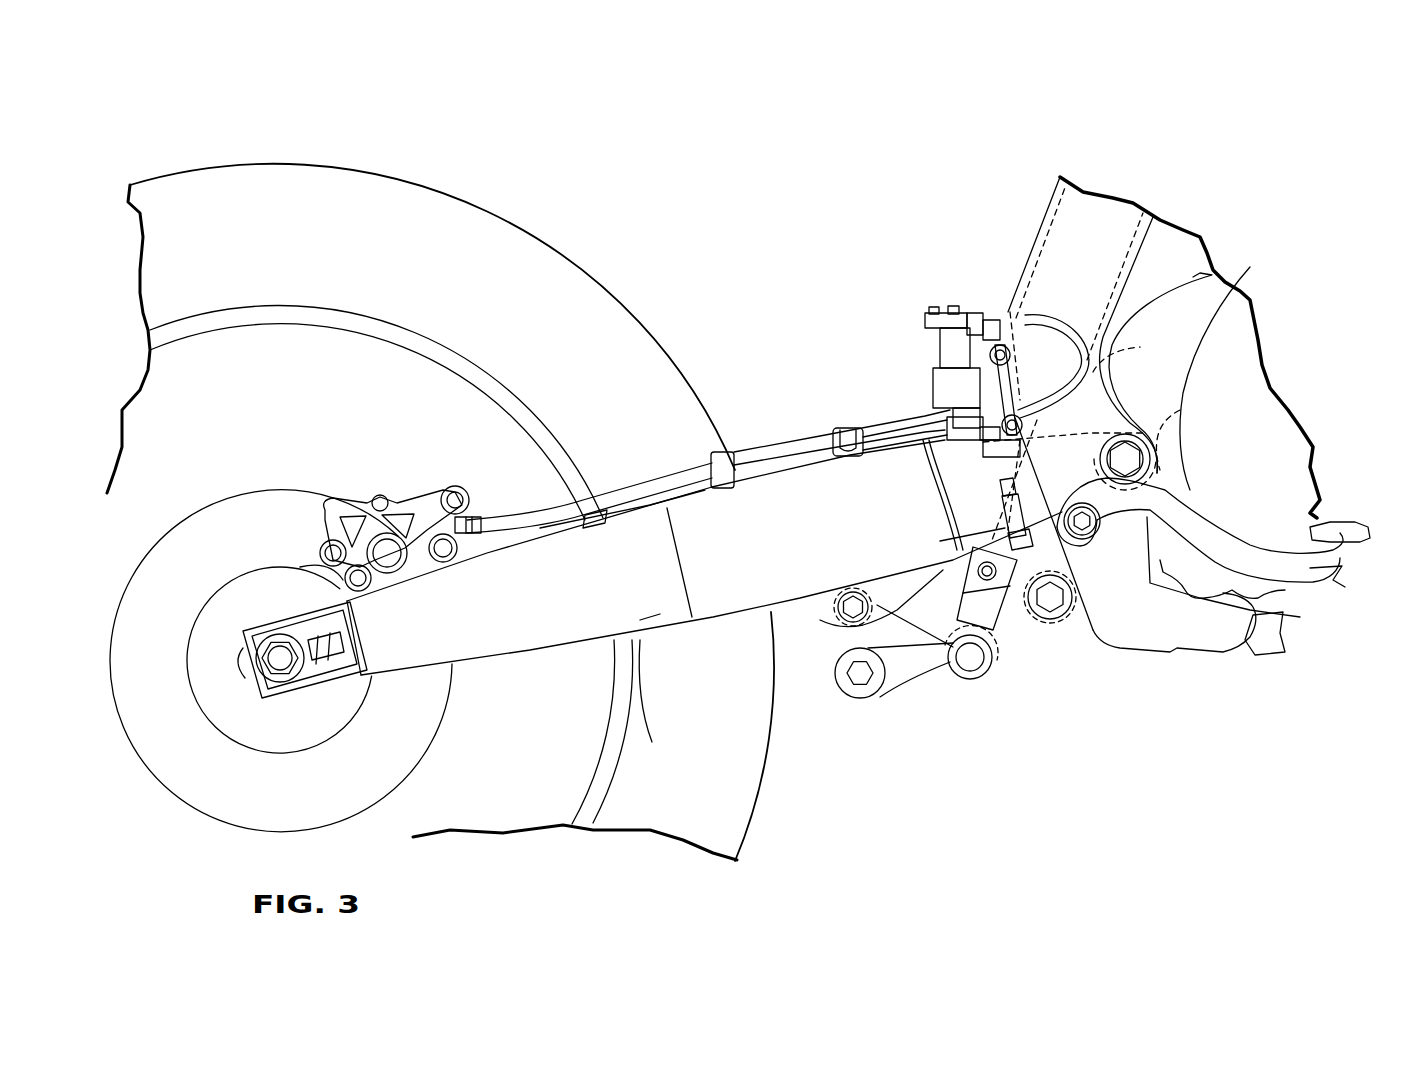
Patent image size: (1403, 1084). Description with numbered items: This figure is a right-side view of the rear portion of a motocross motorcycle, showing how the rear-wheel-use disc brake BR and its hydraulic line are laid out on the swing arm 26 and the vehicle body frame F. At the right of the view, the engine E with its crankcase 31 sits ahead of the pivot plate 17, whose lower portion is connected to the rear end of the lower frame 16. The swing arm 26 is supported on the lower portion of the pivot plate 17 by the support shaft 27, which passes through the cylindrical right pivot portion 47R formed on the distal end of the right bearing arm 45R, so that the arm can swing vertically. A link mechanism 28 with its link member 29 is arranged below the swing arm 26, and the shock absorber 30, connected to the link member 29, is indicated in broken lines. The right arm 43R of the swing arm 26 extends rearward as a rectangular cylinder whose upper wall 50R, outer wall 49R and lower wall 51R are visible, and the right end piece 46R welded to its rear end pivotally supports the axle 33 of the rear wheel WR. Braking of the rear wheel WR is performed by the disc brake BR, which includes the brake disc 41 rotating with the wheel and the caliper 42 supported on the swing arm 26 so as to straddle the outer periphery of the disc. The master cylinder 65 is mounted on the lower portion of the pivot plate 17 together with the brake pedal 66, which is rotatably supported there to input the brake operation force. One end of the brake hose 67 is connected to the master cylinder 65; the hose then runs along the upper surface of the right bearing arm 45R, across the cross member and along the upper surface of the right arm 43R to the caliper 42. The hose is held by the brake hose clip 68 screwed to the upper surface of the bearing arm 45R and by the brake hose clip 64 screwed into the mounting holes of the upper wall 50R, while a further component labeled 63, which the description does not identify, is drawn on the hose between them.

The rear wheel WR is at (505, 238).
The pivot plate 17 is at (1065, 218).
The vehicle body frame F is at (1022, 244).
The engine E is at (1177, 283).
The crankcase 31 is at (1250, 267).
The shock absorber 30 is at (1020, 285).
The clamp 63 is at (855, 432).
The master cylinder 65 is at (987, 392).
The right bearing arm 45R is at (1141, 351).
The right pivot portion 47R is at (1180, 410).
The brake hose 67 is at (795, 462).
The upper wall 50R is at (560, 535).
The brake hose clip 64 is at (722, 452).
The brake disc 41 is at (284, 500).
The rear-wheel-use disc brake BR is at (363, 493).
The caliper 42 is at (401, 524).
The brake pedal 66 is at (1338, 530).
The brake hose clip 68 is at (930, 437).
The support shaft 27 is at (1137, 462).
The right end piece 46R is at (277, 617).
The swing arm 26 is at (712, 624).
The right arm 43R is at (575, 652).
The outer wall 49R is at (422, 658).
The lower wall 51R is at (671, 700).
The link member 29 is at (935, 675).
The lower frame 16 is at (1263, 642).
The axle 33 is at (277, 660).
The link mechanism 28 is at (903, 697).